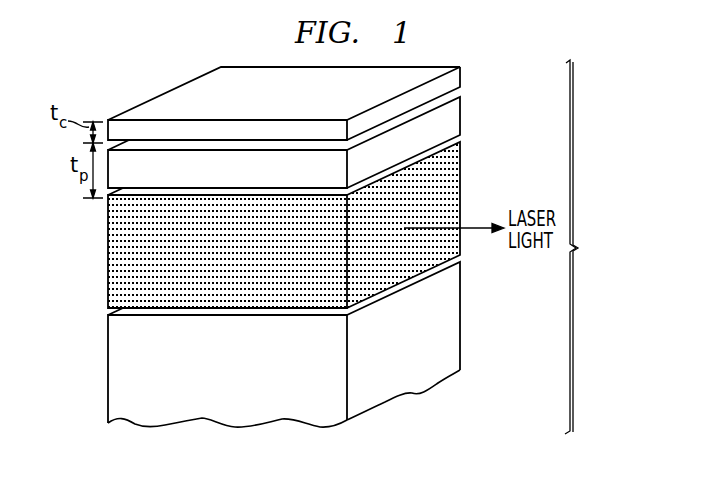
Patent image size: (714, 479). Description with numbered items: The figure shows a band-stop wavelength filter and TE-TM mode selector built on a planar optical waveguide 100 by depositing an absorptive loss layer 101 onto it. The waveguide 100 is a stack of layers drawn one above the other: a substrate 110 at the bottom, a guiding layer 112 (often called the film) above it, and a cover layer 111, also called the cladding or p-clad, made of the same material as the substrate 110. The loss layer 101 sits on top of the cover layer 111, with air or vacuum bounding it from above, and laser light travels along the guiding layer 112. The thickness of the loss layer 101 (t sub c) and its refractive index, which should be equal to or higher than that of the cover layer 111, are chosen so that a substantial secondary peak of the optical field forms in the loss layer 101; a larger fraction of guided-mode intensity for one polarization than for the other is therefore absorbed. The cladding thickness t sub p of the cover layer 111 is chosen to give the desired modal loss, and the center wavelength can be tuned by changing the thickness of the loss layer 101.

The optical waveguide 100 is at (589, 247).
The absorptive loss layer 101 is at (461, 74).
The substrate 110 is at (457, 313).
The cover layer 111 is at (461, 112).
The guiding layer 112 is at (461, 199).